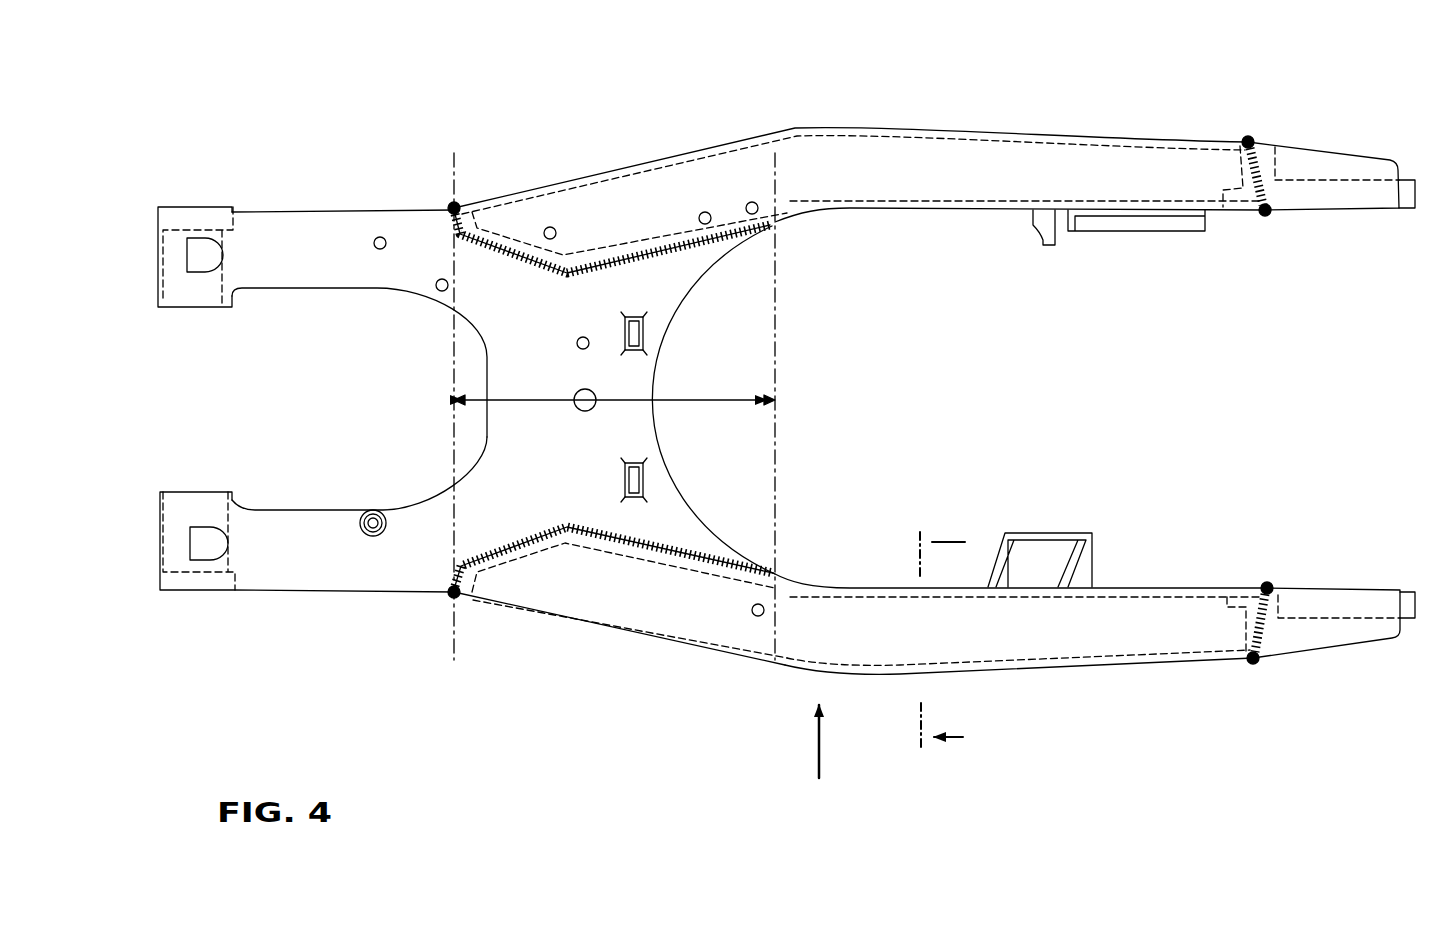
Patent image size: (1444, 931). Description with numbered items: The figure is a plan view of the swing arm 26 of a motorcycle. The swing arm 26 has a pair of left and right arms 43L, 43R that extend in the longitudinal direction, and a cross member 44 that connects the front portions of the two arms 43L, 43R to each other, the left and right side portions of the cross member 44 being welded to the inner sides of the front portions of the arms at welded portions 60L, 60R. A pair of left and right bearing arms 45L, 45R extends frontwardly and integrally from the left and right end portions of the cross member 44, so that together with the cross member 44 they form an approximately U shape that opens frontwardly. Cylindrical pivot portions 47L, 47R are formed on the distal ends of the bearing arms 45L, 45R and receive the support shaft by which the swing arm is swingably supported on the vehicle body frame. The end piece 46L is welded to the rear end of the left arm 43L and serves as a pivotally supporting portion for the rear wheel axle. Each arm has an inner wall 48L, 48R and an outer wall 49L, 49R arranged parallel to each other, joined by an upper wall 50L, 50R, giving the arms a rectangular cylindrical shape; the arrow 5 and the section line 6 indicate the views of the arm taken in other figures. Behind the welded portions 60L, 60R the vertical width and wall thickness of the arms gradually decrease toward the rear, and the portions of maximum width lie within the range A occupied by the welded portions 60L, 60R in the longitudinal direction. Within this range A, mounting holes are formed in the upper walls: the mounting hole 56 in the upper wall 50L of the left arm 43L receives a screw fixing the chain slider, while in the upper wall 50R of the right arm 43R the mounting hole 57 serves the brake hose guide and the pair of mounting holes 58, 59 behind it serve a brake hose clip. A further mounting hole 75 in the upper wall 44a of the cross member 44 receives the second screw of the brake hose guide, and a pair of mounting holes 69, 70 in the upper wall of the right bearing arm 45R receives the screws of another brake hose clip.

The swing arm 26 is at (573, 624).
The right arm 43R is at (834, 122).
The left arm 43L is at (742, 661).
The cross member 44 is at (690, 505).
The upper wall of cross member 44a is at (642, 440).
The right bearing arm 45R is at (313, 235).
The left bearing arm 45L is at (312, 578).
The left end piece 46L is at (1297, 158).
The right pivot portion 47R is at (234, 297).
The left pivot portion 47L is at (234, 499).
The inner wall of right arm 48R is at (885, 213).
The inner wall of left arm 48L is at (970, 585).
The outer wall of right arm 49R is at (1087, 135).
The outer wall of left arm 49L is at (1000, 673).
The upper wall of right arm 50R is at (862, 152).
The upper wall of left arm 50L is at (849, 606).
The mounting hole 56 is at (752, 606).
The mounting hole 57 is at (553, 228).
The mounting hole 58 is at (701, 212).
The mounting hole 59 is at (750, 202).
The right welded portion 60R is at (657, 255).
The left welded portion 60L is at (592, 520).
The mounting hole 69 is at (374, 247).
The mounting hole 70 is at (441, 292).
The mounting hole 75 is at (583, 337).
The range A is at (574, 396).
The section line for FIG. 5 is at (819, 766).
The section line for FIG. 6 is at (942, 646).